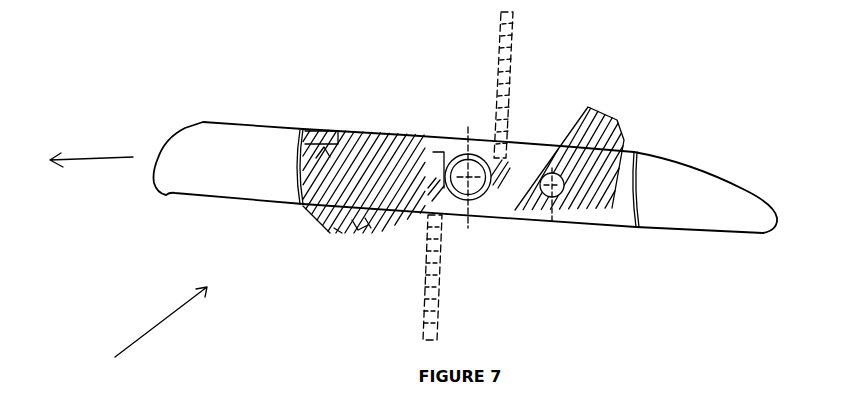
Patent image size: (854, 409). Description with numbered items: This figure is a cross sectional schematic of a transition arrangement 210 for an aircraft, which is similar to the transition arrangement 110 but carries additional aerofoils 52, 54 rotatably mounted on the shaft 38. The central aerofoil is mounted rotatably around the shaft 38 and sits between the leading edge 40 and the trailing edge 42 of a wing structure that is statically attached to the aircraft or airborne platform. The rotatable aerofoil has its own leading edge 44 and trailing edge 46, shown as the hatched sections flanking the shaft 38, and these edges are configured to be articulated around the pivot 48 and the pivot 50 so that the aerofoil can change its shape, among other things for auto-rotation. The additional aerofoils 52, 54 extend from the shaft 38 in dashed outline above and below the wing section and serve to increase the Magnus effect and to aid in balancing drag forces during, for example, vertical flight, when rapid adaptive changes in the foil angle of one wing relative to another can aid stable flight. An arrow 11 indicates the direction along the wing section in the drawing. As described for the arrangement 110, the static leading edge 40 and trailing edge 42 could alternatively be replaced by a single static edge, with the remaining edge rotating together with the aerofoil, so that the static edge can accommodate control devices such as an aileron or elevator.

The transition arrangement 110 is at (153, 5).
The direction arrow 11 is at (103, 128).
The transition arrangement 210 is at (110, 393).
The leading edge 40 is at (167, 192).
The trailing edge 42 is at (747, 233).
The leading edge 44 is at (338, 236).
The trailing edge 46 is at (607, 110).
The pivot 48 is at (410, 136).
The shaft 38 is at (490, 193).
The pivot 50 is at (565, 190).
The additional aerofoil 52 is at (510, 48).
The additional aerofoil 54 is at (437, 305).